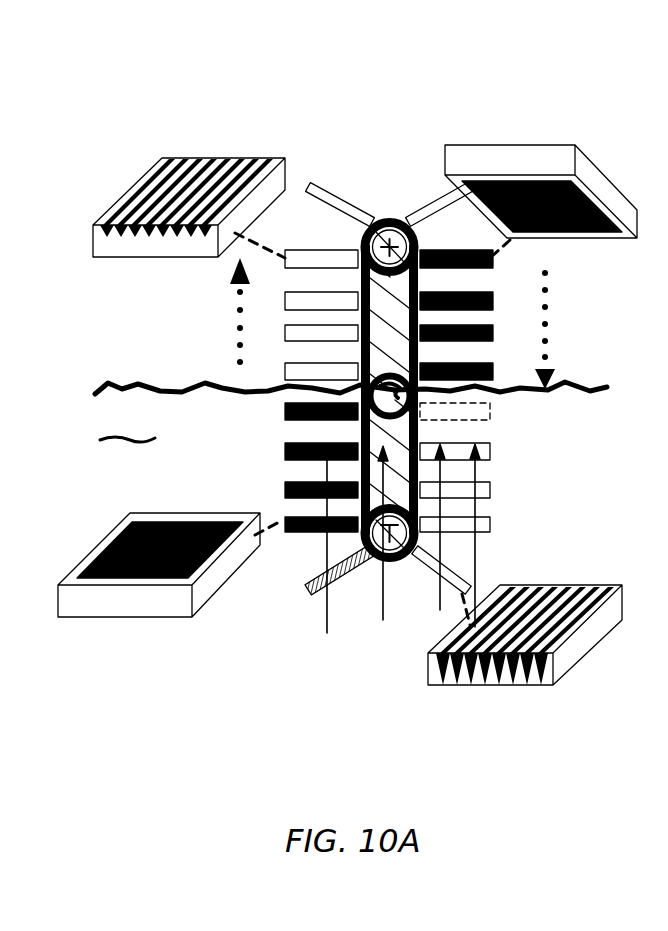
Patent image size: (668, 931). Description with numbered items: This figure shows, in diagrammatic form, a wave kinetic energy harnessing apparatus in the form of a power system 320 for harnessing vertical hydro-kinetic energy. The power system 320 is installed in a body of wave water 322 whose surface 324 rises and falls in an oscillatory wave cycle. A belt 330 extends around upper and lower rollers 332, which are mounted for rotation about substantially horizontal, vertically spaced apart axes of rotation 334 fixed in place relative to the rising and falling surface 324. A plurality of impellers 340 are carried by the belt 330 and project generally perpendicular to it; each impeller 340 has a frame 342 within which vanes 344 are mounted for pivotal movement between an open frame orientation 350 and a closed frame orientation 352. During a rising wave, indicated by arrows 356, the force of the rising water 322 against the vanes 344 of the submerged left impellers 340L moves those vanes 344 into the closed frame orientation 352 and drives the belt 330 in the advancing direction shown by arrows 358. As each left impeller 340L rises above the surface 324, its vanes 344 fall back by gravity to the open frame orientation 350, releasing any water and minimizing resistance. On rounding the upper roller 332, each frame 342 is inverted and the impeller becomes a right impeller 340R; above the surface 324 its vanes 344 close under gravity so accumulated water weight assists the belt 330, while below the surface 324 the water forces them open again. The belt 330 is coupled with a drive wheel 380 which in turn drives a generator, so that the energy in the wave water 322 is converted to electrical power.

The power system 320 is at (358, 116).
The body of wave water 322 is at (125, 422).
The surface of the water 324 is at (128, 384).
The belt 330 is at (389, 218).
The rollers 332 is at (417, 239).
The axes of rotation 334 is at (362, 236).
The impellers 340 is at (116, 199).
The left impellers 340L is at (286, 456).
The right impellers 340R is at (495, 300).
The frame 342 is at (105, 252).
The vanes 344 is at (240, 160).
The open frame orientation 350 is at (159, 155).
The closed frame orientation 352 is at (528, 143).
The arrows depicting rising wave 356 is at (382, 610).
The arrows depicting advancing direction 358 is at (240, 340).
The drive wheel 380 is at (430, 372).